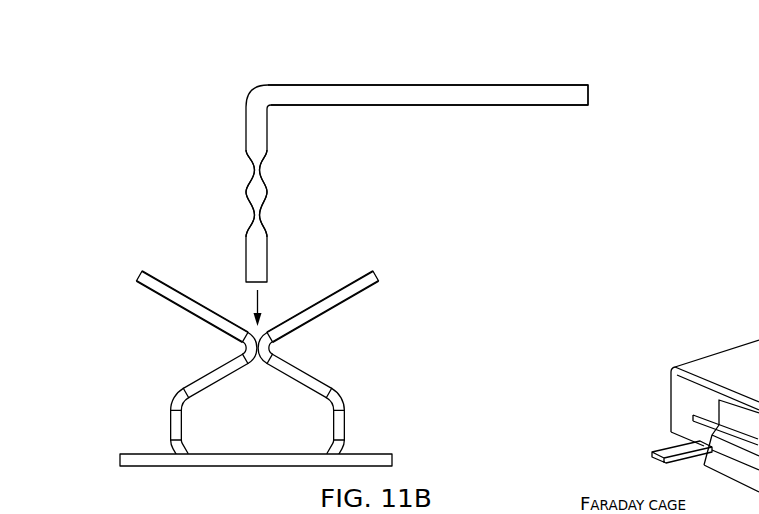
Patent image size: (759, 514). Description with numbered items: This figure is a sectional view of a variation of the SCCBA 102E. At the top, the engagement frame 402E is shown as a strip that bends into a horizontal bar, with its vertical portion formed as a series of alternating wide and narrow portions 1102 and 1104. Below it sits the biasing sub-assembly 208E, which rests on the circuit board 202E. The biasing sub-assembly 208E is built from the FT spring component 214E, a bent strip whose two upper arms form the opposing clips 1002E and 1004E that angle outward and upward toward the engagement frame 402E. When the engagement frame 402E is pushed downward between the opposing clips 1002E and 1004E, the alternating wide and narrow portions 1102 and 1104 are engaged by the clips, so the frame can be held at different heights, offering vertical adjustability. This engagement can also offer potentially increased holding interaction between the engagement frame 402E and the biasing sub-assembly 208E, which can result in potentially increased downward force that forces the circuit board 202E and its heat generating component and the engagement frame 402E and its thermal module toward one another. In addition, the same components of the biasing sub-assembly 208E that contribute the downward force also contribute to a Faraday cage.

The SCCBA 102E is at (213, 74).
The engagement frame 402E is at (588, 93).
The wide portion 1102 is at (247, 192).
The narrow portion 1104 is at (260, 171).
The clip 1002E is at (193, 298).
The clip 1004E is at (323, 285).
The biasing sub-assembly 208E is at (304, 342).
The FT spring component 214E is at (343, 390).
The circuit board 202E is at (378, 454).